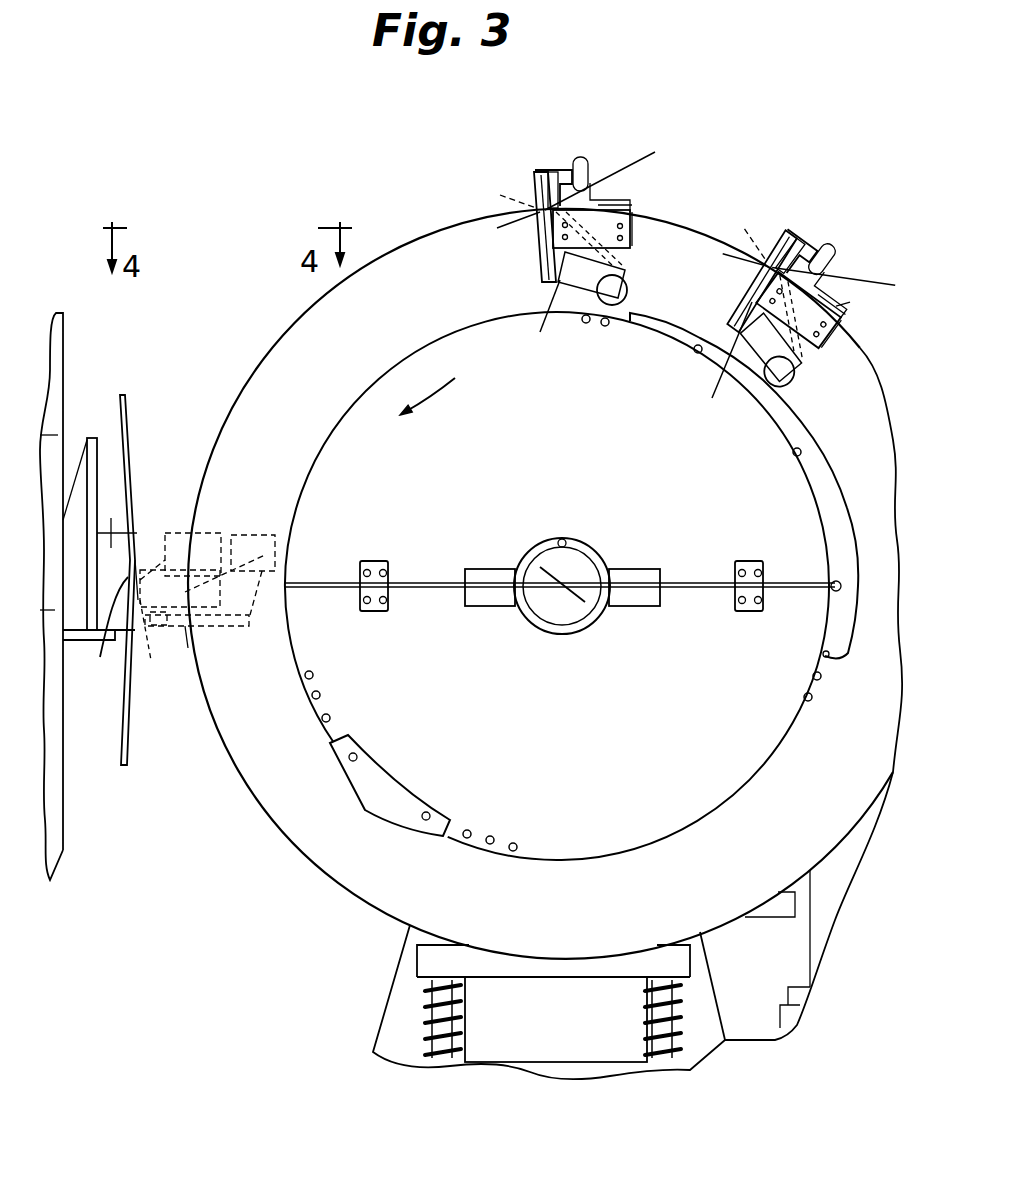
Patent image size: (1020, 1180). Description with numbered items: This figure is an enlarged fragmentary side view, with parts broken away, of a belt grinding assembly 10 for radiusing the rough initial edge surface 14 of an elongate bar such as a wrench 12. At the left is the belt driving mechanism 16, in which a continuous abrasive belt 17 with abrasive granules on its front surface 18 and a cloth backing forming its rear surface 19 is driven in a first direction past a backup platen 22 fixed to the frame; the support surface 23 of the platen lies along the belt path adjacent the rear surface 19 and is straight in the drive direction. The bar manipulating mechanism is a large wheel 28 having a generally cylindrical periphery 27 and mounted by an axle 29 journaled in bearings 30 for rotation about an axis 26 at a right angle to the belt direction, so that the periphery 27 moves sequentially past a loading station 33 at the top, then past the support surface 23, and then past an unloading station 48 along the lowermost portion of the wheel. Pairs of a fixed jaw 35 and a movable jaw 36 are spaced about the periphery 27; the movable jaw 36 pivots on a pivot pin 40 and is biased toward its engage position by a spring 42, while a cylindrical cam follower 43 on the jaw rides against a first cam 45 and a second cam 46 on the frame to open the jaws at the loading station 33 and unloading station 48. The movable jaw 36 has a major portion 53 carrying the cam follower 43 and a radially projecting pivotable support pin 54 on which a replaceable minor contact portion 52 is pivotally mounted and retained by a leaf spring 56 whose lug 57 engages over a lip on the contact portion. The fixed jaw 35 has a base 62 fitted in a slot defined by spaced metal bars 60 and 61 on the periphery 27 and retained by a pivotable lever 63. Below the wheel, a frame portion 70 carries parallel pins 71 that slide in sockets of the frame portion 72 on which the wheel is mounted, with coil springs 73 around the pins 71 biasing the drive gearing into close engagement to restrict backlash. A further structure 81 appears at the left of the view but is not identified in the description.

The belt grinding assembly 10 is at (716, 108).
The wrench 12 is at (596, 183).
The initial edge surface 14 is at (592, 170).
The belt driving mechanism 16 is at (62, 850).
The continuous abrasive belt 17 is at (126, 770).
The front surface 18 is at (130, 725).
The rear surface 19 is at (124, 703).
The backup platen 22 is at (117, 523).
The support surface 23 is at (137, 560).
The axis 26 is at (585, 602).
The periphery 27 is at (318, 885).
The wheel 28 is at (820, 838).
The axle 29 is at (518, 603).
The bearings 30 is at (566, 635).
The loading station 33 is at (580, 100).
The fixed jaw 35 is at (622, 200).
The movable jaw 36 is at (553, 168).
The pivot pin 40 is at (636, 348).
The spring 42 is at (632, 248).
The cam follower 43 is at (628, 290).
The first cam 45 is at (838, 628).
The second cam 46 is at (350, 780).
The unloading station 48 is at (340, 968).
The minor contact portion 52 is at (578, 163).
The major portion 53 is at (540, 268).
The pivotable support pin 54 is at (752, 252).
The leaf spring 56 is at (542, 238).
The lug 57 is at (540, 175).
The metal bar 60 is at (758, 258).
The metal bar 61 is at (634, 213).
The base 62 is at (858, 272).
The lever 63 is at (850, 302).
The frame means portion 70 is at (596, 972).
The parallel pins 71 is at (462, 1018).
The frame means portion 72 is at (392, 1010).
The coil springs 73 is at (465, 1050).
The wall 81 is at (63, 378).